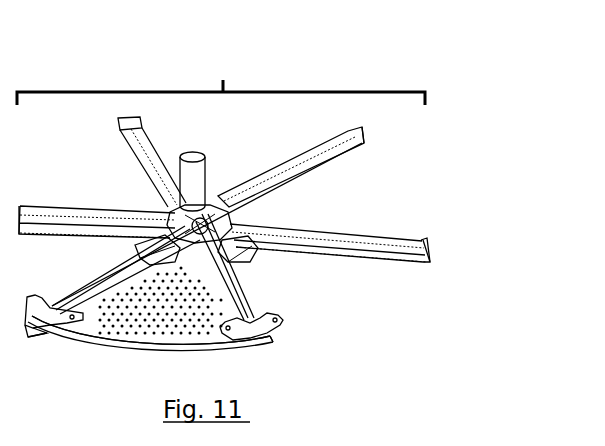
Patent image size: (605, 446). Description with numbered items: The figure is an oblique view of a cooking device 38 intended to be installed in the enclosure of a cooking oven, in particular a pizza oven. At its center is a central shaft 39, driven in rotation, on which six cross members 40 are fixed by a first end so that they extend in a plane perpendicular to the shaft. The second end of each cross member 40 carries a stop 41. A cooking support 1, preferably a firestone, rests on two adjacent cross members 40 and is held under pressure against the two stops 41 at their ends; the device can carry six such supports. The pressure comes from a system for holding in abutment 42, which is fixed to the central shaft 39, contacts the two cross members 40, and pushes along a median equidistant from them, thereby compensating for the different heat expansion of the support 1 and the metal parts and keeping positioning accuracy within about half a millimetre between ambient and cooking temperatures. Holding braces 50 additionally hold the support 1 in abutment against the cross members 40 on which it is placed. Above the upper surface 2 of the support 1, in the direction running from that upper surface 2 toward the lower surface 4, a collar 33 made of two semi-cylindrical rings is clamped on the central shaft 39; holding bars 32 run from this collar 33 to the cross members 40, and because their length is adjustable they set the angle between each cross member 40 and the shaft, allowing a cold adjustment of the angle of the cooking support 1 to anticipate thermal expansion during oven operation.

The cooking device 38 is at (221, 81).
The central shaft 39 is at (191, 170).
The collar 33 is at (209, 198).
The holding bar 32 is at (172, 177).
The cross member 40 is at (307, 172).
The stop 41 is at (362, 141).
The system for holding in abutment 42 is at (189, 250).
The holding brace 50 is at (39, 311).
The lower surface 4 is at (103, 354).
The upper surface 2 is at (178, 343).
The cooking support 1 is at (236, 350).